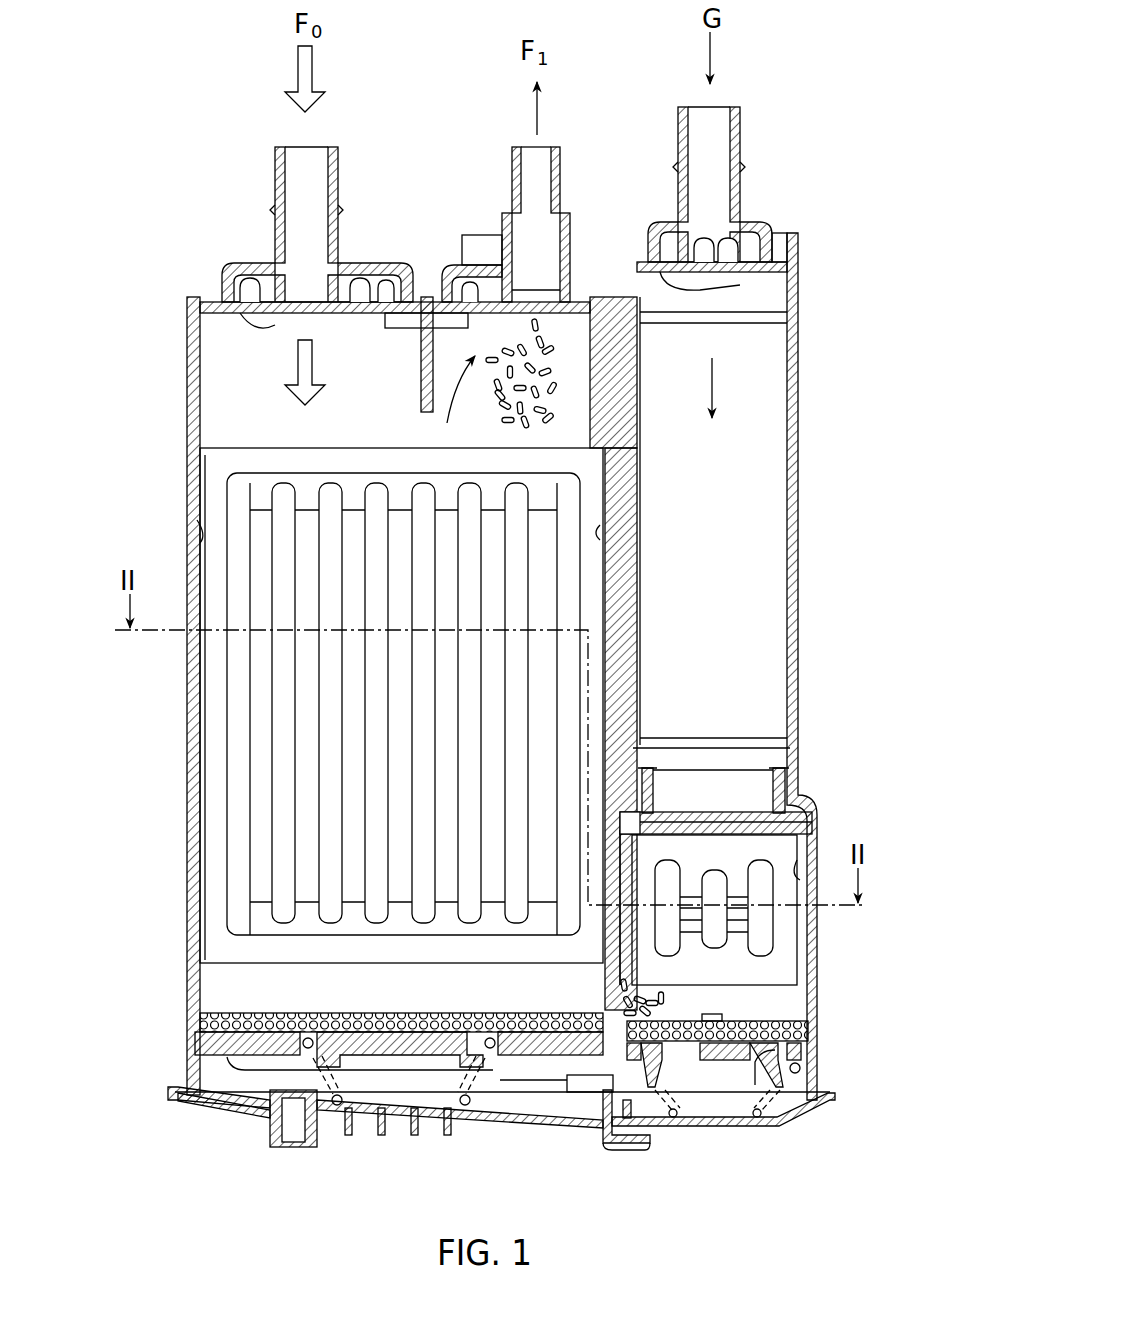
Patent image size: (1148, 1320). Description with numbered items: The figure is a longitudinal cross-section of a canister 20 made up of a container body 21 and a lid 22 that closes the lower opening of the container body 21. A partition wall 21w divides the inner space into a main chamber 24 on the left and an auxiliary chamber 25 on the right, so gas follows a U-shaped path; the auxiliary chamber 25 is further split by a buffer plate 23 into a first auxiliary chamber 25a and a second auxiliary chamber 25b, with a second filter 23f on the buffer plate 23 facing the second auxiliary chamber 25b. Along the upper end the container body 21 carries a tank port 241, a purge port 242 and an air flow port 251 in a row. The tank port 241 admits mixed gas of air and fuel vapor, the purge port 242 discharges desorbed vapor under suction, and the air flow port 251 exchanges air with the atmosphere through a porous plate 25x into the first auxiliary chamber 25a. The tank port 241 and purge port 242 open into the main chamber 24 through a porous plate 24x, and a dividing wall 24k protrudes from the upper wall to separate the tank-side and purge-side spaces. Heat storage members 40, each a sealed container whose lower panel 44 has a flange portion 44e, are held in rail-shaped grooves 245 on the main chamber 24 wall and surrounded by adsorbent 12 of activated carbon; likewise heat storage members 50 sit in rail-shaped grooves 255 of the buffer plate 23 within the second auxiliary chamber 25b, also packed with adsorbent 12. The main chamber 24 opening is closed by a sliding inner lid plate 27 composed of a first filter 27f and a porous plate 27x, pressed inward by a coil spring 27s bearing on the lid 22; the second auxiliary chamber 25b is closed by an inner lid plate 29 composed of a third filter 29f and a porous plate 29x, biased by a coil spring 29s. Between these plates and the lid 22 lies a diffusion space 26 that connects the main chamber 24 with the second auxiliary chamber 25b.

The canister 20 is at (185, 165).
The container body 21 is at (812, 352).
The partition wall 21w is at (625, 465).
The lid 22 is at (718, 1128).
The buffer plate 23 is at (750, 810).
The second filter 23f is at (783, 820).
The main chamber 24 is at (255, 369).
The dividing wall 24k is at (422, 362).
The porous plate 24x is at (227, 303).
The tank port 241 is at (302, 160).
The purge port 242 is at (540, 152).
The rail-shaped grooves 245 is at (195, 525).
The auxiliary chamber 25 is at (752, 597).
The first auxiliary chamber 25a is at (760, 515).
The second auxiliary chamber 25b is at (803, 935).
The porous plate 25x is at (730, 274).
The air flow port 251 is at (713, 172).
The rail-shaped grooves 255 is at (632, 887).
The diffusion space 26 is at (547, 1084).
The inner lid plate 27 is at (227, 1064).
The first filter 27f is at (210, 1021).
The coil spring 27s is at (478, 1082).
The porous plate 27x is at (212, 1042).
The inner lid plate 29 is at (777, 1118).
The third filter 29f is at (782, 1031).
The coil spring 29s is at (658, 1102).
The porous plate 29x is at (807, 1063).
The heat storage members 40 is at (230, 748).
The lower panel 44 is at (263, 874).
The flange portion 44e is at (213, 708).
The heat storage members 50 is at (732, 941).
The adsorbent 12 is at (571, 347).